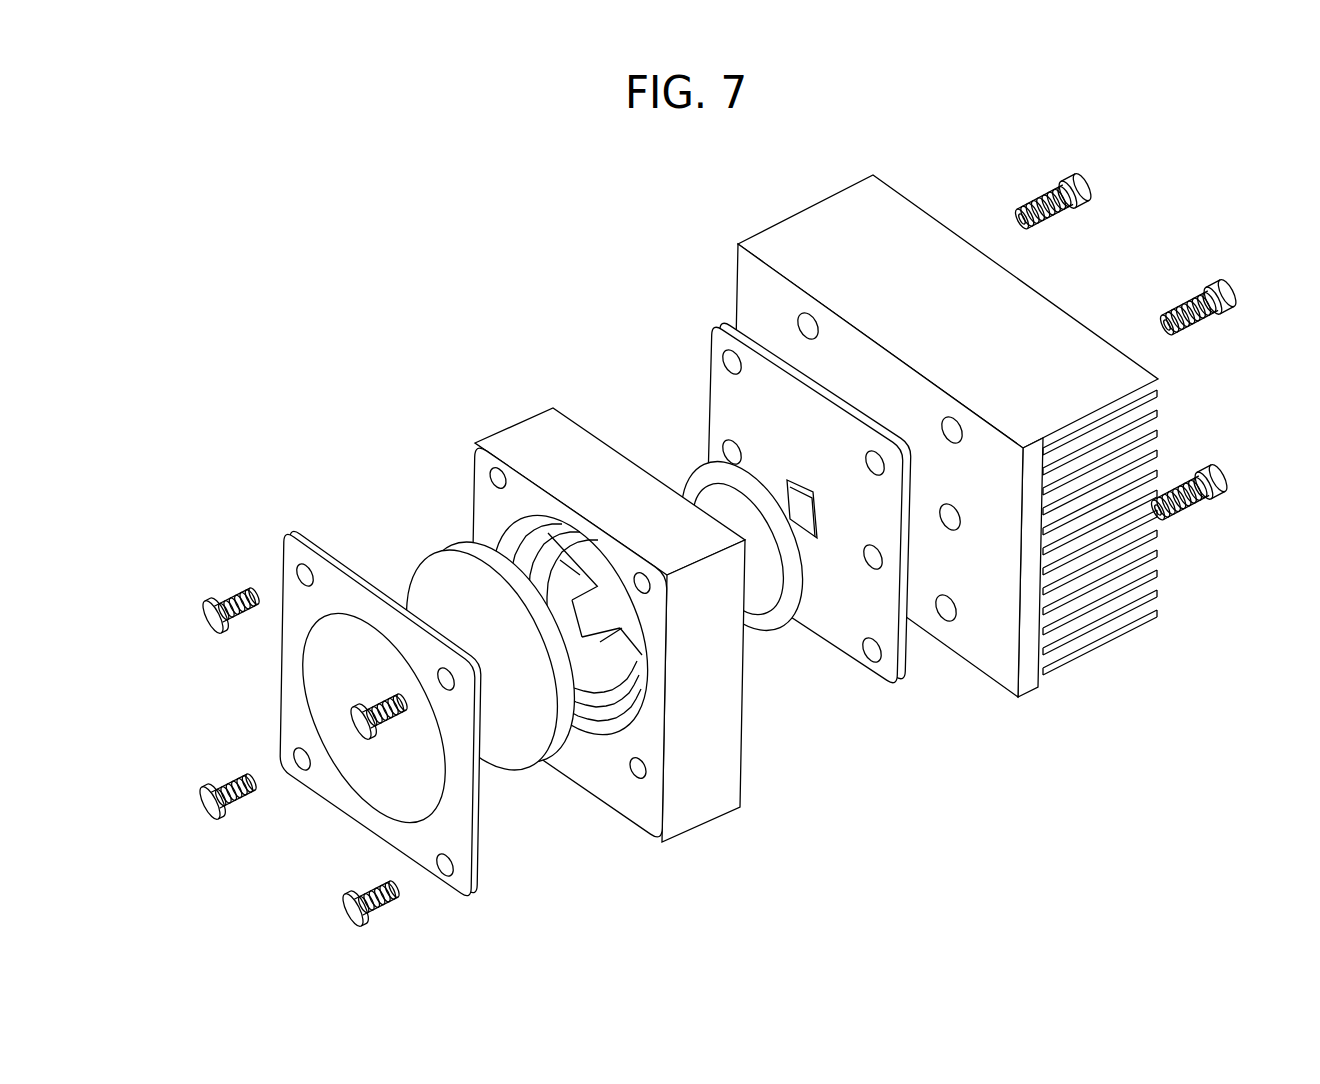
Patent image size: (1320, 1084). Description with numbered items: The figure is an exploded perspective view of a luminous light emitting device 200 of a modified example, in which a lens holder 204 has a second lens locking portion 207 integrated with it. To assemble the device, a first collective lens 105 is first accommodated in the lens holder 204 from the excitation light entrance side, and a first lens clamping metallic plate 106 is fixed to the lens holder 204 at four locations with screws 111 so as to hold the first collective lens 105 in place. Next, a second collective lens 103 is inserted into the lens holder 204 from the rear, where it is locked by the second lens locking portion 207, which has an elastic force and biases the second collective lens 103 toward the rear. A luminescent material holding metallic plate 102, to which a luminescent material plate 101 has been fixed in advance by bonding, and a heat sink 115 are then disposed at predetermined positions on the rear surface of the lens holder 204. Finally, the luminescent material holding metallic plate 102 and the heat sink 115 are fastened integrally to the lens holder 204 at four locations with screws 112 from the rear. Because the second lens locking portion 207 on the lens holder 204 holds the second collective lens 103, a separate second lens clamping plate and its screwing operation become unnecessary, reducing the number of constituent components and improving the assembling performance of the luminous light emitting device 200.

The luminous light emitting device 200 is at (447, 393).
The luminescent material plate 101 is at (798, 515).
The luminescent material holding metallic plate 102 is at (873, 605).
The second collective lens 103 is at (703, 490).
The first collective lens 105 is at (452, 610).
The first lens clamping metallic plate 106 is at (294, 604).
The screws 111 is at (358, 722).
The screws 112 is at (1170, 307).
The heat sink 115 is at (1028, 678).
The lens holder 204 is at (703, 717).
The second lens locking portion 207 is at (545, 553).